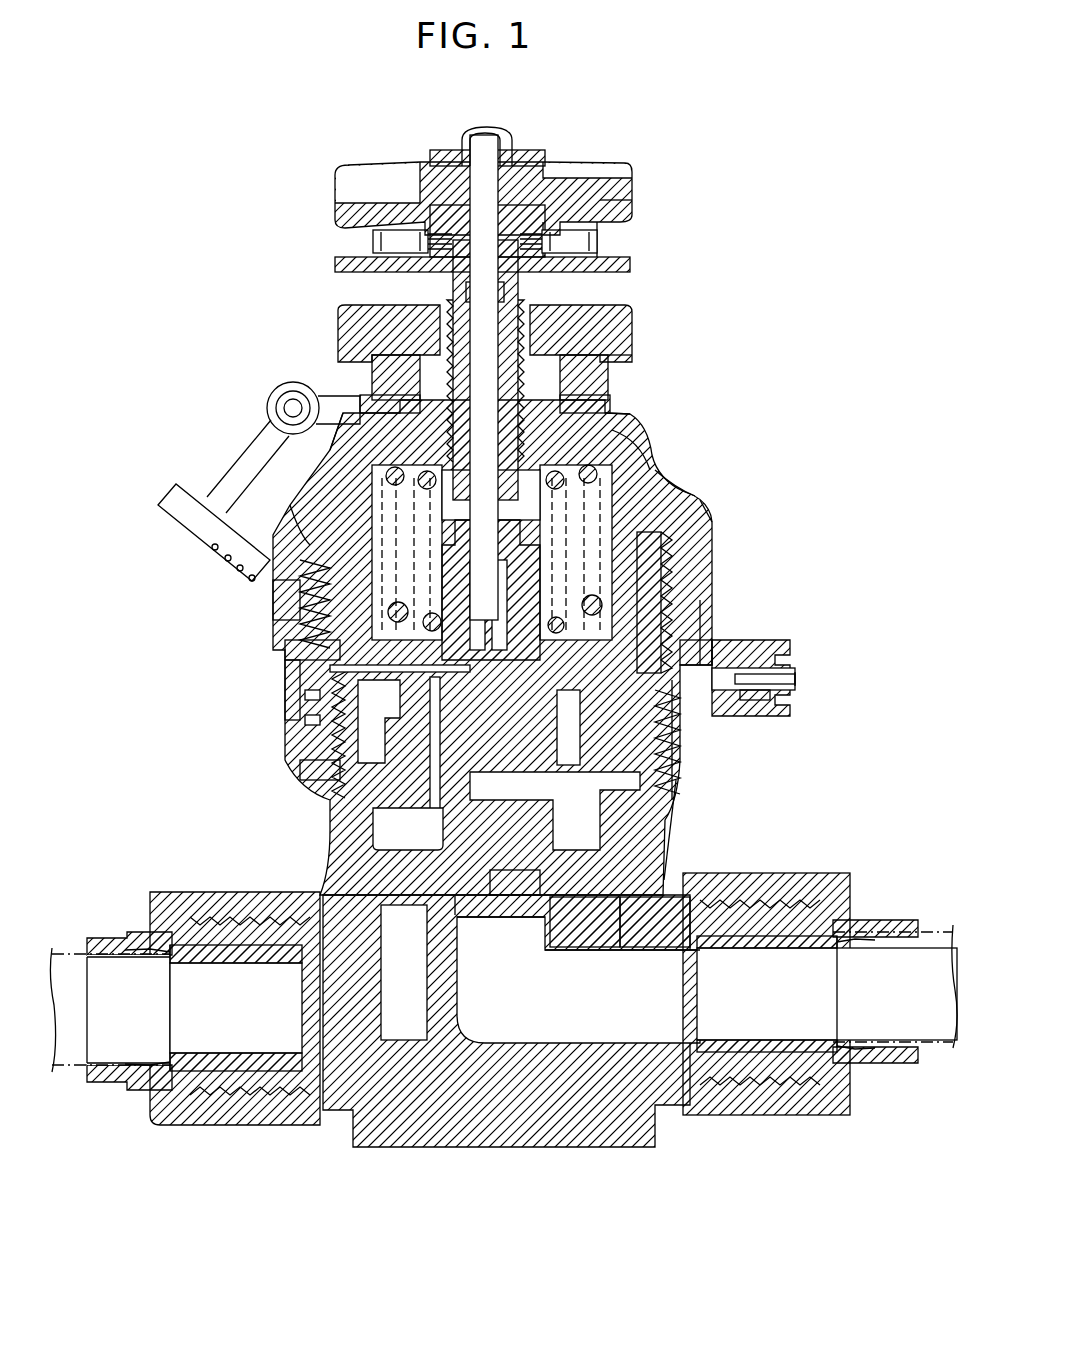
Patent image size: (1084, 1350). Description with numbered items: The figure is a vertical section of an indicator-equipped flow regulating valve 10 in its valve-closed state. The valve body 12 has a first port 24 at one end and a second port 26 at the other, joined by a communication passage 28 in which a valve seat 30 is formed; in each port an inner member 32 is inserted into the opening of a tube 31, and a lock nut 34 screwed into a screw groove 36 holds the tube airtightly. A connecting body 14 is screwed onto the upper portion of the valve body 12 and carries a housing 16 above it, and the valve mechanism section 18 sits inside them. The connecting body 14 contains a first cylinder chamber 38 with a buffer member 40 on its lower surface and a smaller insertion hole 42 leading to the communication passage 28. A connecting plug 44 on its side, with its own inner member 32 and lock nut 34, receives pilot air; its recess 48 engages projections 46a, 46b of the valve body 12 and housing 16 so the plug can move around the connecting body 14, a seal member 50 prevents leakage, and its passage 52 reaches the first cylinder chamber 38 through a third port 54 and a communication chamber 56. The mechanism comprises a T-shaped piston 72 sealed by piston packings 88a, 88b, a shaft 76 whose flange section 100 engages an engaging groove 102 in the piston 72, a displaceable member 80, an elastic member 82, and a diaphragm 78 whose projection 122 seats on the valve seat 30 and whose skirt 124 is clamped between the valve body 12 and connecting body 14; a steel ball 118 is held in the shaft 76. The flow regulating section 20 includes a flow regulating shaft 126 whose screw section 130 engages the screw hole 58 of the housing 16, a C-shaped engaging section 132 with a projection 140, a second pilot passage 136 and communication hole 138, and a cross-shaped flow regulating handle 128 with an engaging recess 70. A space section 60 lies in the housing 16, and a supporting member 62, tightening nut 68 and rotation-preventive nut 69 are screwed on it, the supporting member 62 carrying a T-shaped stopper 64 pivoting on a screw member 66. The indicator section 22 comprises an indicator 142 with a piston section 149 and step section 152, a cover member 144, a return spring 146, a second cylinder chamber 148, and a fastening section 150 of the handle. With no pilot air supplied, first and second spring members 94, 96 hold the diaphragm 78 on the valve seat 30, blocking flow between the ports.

The indicator-equipped flow regulating valve 10 is at (644, 74).
The valve body 12 is at (425, 1147).
The connecting body 14 is at (690, 560).
The housing 16 is at (640, 447).
The valve mechanism section 18 is at (660, 494).
The flow regulating section 20 is at (520, 300).
The indicator section 22 is at (500, 148).
The first port 24 is at (262, 900).
The second port 26 is at (705, 885).
The communication passage 28 is at (575, 1043).
The valve seat 30 is at (560, 955).
The tube 31 is at (66, 948).
The inner member 32 is at (218, 965).
The lock nut 34 is at (230, 1125).
The screw groove 36 is at (195, 910).
The first cylinder chamber 38 is at (300, 680).
The buffer member 40 is at (345, 732).
The insertion hole 42 is at (572, 745).
The connecting plug 44 is at (795, 708).
The projection 46a is at (705, 640).
The projection 46b is at (703, 718).
The recess 48 is at (692, 648).
The seal member 50 is at (305, 720).
The passage 52 is at (742, 716).
The third port 54 is at (662, 625).
The communication chamber 56 is at (684, 808).
The screw hole 58 is at (380, 426).
The space section 60 is at (302, 540).
The supporting member 62 is at (580, 405).
The stopper 64 is at (190, 508).
The screw member 66 is at (288, 405).
The tightening nut 68 is at (585, 374).
The rotation-preventive nut 69 is at (600, 320).
The engaging recess 70 is at (362, 262).
The piston 72 is at (330, 630).
The shaft 76 is at (335, 803).
The diaphragm 78 is at (505, 920).
The displaceable member 80 is at (590, 947).
The elastic member 82 is at (617, 948).
The piston packing 88a is at (335, 660).
The piston packing 88b is at (340, 774).
The first spring member 94 is at (660, 475).
The second spring member 96 is at (632, 418).
The flange section 100 is at (562, 830).
The engaging groove 102 is at (470, 918).
The steel ball 118 is at (455, 572).
The projection 122 is at (520, 918).
The skirt 124 is at (393, 900).
The flow regulating shaft 126 is at (560, 360).
The flow regulating handle 128 is at (620, 212).
The screw section 130 is at (395, 378).
The engaging section 132 is at (664, 598).
The second pilot passage 136 is at (385, 333).
The communication hole 138 is at (430, 482).
The projection 140 is at (462, 526).
The indicator 142 is at (440, 155).
The cover member 144 is at (487, 127).
The return spring 146 is at (395, 172).
The second cylinder chamber 148 is at (535, 272).
The piston section 149 is at (468, 300).
The fastening section 150 is at (518, 235).
The step section 152 is at (580, 260).